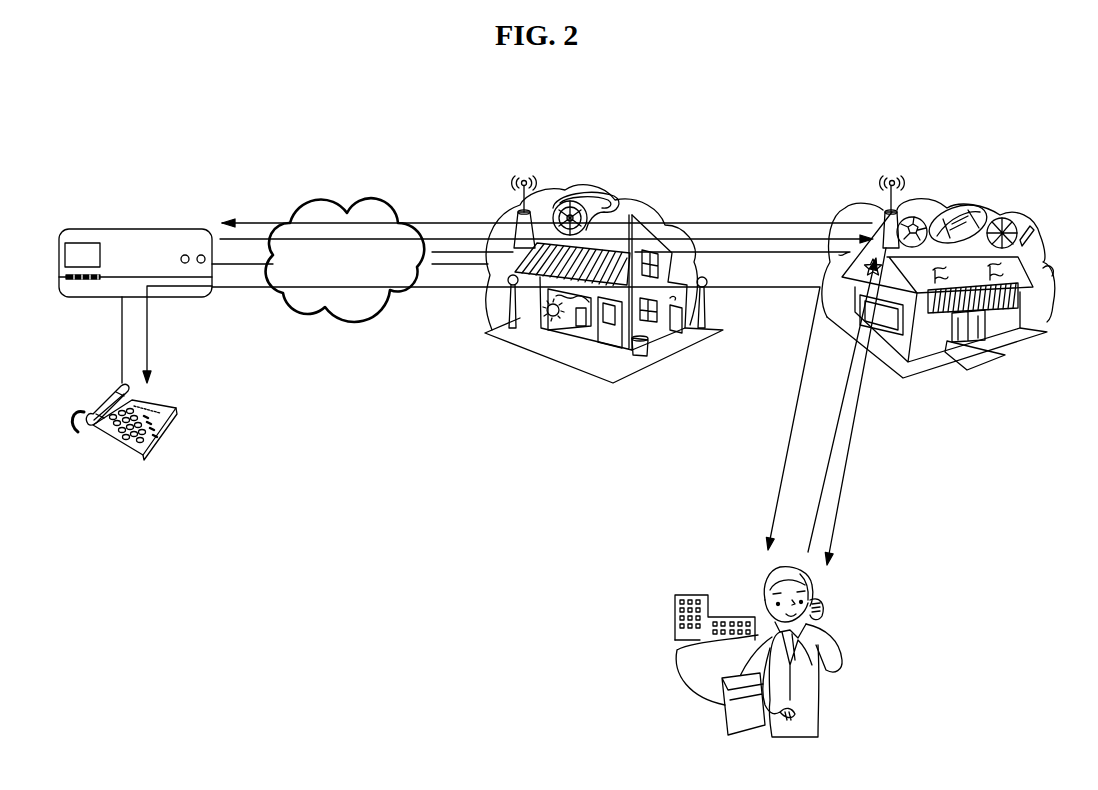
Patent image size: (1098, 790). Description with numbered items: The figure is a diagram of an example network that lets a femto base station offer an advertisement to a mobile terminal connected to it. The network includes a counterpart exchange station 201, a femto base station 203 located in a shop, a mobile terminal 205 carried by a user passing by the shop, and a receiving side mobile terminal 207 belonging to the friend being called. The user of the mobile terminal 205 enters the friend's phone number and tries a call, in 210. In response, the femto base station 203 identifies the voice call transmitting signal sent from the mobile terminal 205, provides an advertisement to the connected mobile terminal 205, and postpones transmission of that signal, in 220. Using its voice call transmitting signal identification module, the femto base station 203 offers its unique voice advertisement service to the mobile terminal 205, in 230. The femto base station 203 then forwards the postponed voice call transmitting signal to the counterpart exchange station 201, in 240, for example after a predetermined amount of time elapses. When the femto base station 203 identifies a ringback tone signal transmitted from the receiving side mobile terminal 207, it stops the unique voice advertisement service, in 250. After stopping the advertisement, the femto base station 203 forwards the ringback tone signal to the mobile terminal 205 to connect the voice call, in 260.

The counterpart exchange station 201 is at (133, 229).
The femto base station 203 is at (595, 187).
The mobile terminal 205 is at (827, 621).
The receiving side mobile terminal 207 is at (112, 448).
The call attempt 210 is at (828, 462).
The advertisement provision and call postponement 220 is at (920, 198).
The unique voice advertisement service offering 230 is at (848, 465).
The forwarding of postponed voice call transmitting signal 240 is at (770, 222).
The stopping of voice advertisement service 250 is at (773, 240).
The ringback tone forwarding and call connection 260 is at (790, 287).